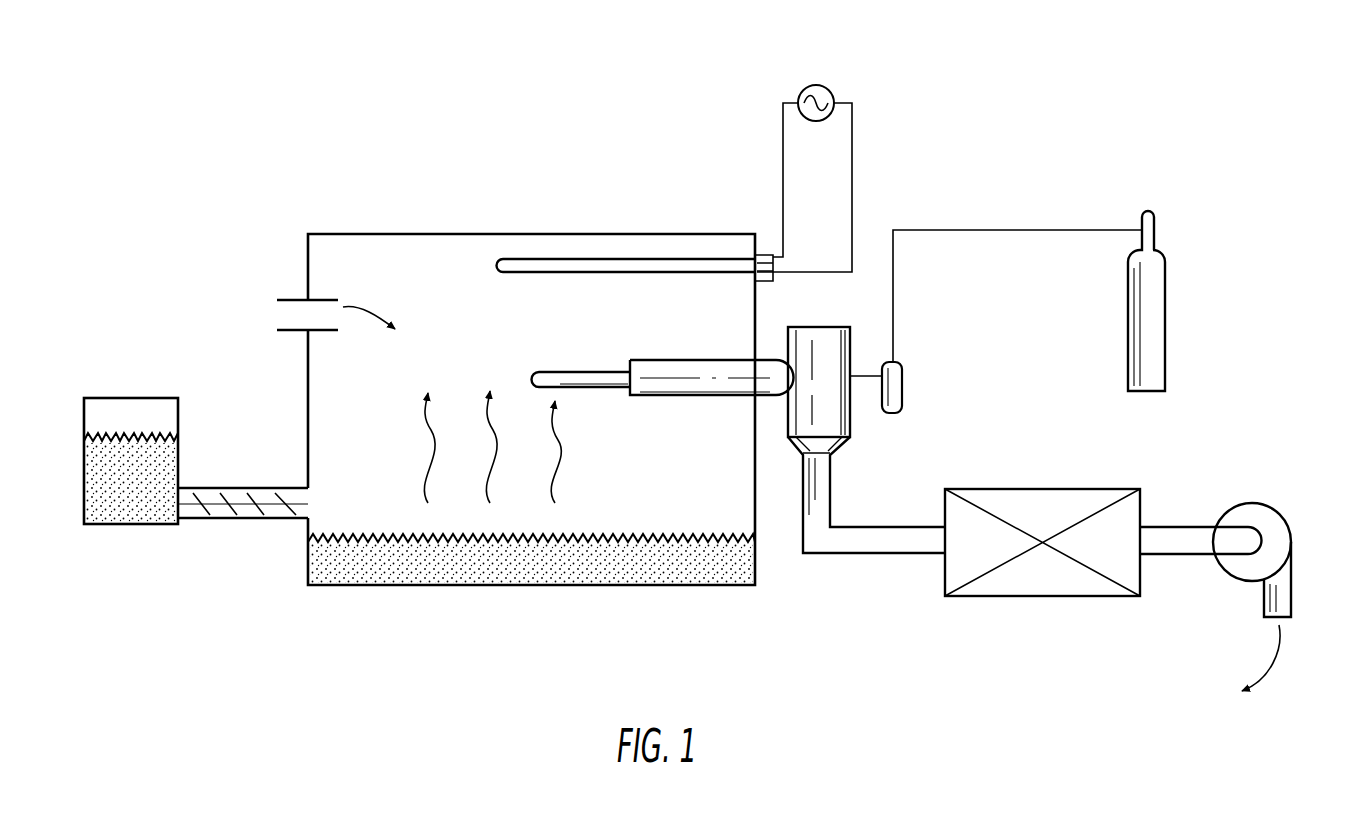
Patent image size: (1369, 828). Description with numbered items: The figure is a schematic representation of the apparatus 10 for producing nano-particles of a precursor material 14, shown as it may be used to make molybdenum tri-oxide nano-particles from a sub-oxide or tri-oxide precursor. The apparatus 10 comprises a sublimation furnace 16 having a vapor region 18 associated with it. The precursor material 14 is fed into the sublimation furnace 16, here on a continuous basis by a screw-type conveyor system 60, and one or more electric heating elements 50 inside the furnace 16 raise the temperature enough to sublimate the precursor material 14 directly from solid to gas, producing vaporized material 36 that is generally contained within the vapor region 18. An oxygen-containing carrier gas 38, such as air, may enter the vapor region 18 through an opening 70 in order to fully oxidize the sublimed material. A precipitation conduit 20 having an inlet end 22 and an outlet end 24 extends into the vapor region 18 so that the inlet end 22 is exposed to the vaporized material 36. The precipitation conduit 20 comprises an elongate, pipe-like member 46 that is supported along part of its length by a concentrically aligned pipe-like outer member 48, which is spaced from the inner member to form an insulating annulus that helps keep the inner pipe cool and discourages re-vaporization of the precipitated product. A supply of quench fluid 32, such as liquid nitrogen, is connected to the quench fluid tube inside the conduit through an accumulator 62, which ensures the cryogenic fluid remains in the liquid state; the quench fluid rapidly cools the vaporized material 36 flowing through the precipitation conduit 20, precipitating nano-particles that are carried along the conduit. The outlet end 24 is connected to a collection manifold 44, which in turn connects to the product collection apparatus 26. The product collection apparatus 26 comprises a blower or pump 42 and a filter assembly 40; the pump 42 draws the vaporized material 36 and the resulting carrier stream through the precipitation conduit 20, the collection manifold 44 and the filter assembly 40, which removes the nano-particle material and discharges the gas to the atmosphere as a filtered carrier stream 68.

The apparatus for producing nano-particles 10 is at (206, 165).
The precursor material 14 is at (129, 432).
The sublimation furnace 16 is at (414, 230).
The vapor region 18 is at (452, 339).
The precipitation conduit 20 is at (684, 352).
The inlet end 22 is at (537, 371).
The outlet end 24 is at (763, 358).
The product collection apparatus 26 is at (1010, 610).
The supply of quench fluid 32 is at (1168, 283).
The vaporized material 36 is at (427, 460).
The oxygen-containing carrier gas 38 is at (270, 309).
The filter assembly 40 is at (1031, 487).
The blower or pump 42 is at (1256, 502).
The collection manifold 44 is at (845, 440).
The pipe-like member 46 is at (597, 390).
The pipe-like outer member 48 is at (691, 397).
The electric heating elements 50 is at (575, 261).
The screw-type conveyor system 60 is at (244, 505).
The accumulator 62 is at (905, 375).
The filtered carrier stream 68 is at (1277, 662).
The opening 70 is at (290, 300).